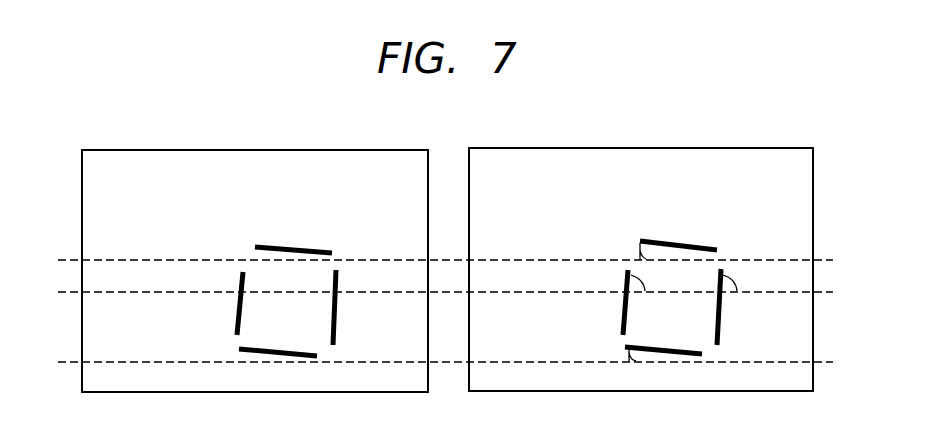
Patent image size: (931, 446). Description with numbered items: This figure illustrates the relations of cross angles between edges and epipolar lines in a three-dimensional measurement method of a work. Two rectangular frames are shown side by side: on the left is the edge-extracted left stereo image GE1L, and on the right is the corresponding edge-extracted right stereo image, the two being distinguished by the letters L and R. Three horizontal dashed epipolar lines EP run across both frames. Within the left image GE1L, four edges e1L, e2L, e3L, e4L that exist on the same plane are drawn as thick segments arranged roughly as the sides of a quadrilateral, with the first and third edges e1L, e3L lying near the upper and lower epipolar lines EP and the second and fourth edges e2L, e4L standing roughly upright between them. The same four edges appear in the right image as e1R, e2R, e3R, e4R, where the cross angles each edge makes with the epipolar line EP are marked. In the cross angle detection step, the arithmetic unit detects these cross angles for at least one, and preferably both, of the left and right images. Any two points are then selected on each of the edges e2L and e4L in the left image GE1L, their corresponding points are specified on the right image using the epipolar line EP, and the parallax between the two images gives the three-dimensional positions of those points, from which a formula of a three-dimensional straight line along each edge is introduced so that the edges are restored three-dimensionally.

The left stereo image subjected to edge extraction GE1L is at (137, 160).
The epipolar line EP is at (70, 258).
The first edge in left image e1L is at (283, 244).
The second edge in left image e2L is at (240, 308).
The third edge in left image e3L is at (258, 352).
The fourth edge in left image e4L is at (335, 307).
The first edge in right image e1R is at (668, 240).
The second edge in right image e2R is at (625, 305).
The third edge in right image e3R is at (649, 352).
The fourth edge in right image e4R is at (721, 310).